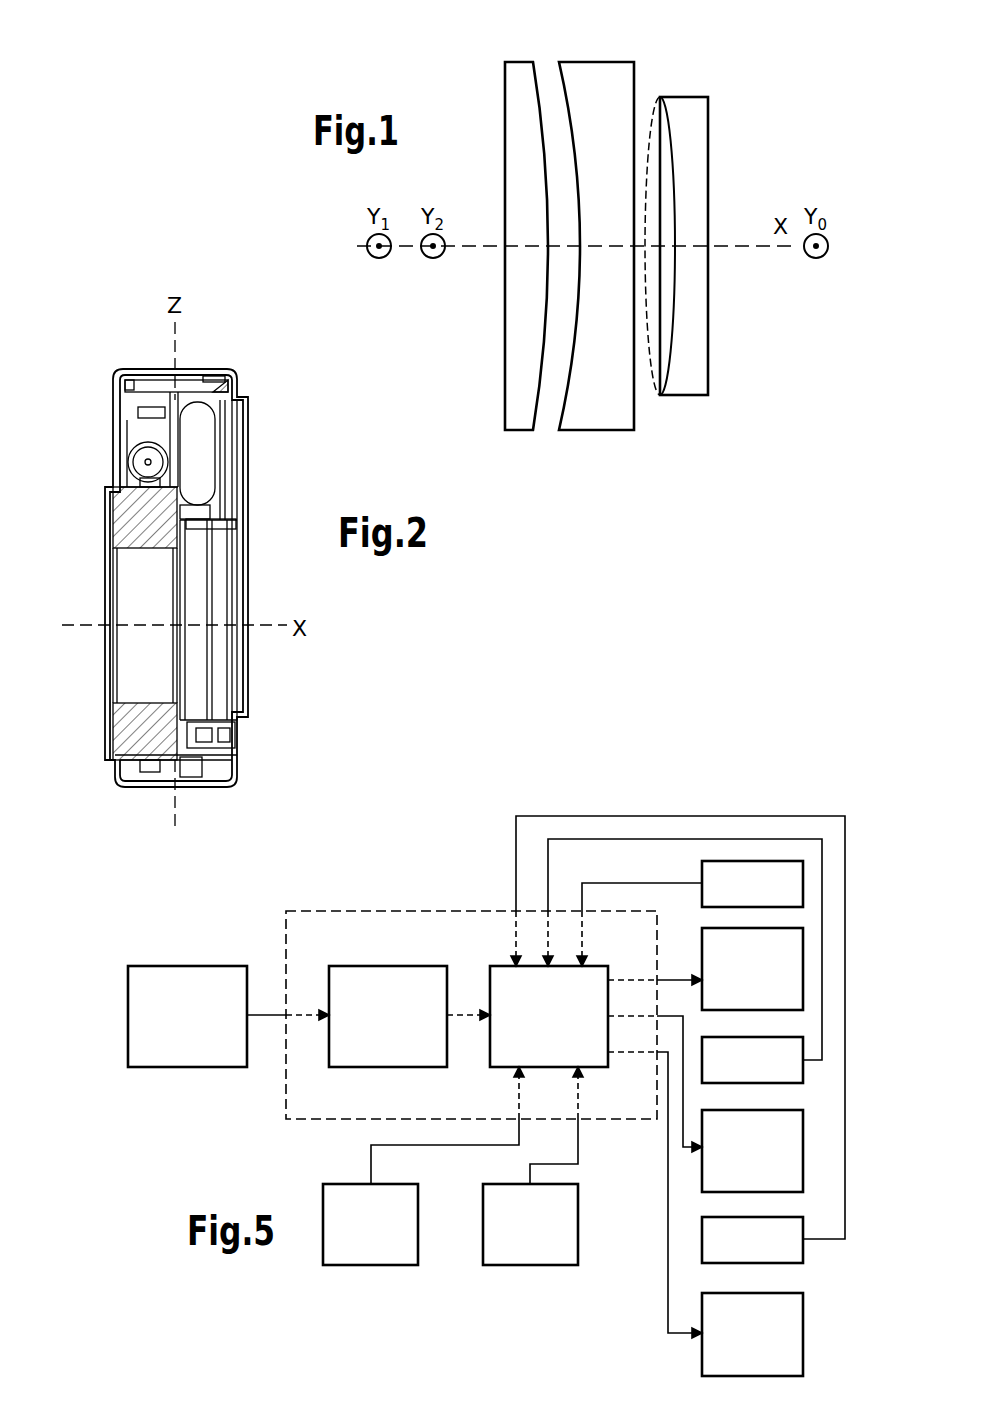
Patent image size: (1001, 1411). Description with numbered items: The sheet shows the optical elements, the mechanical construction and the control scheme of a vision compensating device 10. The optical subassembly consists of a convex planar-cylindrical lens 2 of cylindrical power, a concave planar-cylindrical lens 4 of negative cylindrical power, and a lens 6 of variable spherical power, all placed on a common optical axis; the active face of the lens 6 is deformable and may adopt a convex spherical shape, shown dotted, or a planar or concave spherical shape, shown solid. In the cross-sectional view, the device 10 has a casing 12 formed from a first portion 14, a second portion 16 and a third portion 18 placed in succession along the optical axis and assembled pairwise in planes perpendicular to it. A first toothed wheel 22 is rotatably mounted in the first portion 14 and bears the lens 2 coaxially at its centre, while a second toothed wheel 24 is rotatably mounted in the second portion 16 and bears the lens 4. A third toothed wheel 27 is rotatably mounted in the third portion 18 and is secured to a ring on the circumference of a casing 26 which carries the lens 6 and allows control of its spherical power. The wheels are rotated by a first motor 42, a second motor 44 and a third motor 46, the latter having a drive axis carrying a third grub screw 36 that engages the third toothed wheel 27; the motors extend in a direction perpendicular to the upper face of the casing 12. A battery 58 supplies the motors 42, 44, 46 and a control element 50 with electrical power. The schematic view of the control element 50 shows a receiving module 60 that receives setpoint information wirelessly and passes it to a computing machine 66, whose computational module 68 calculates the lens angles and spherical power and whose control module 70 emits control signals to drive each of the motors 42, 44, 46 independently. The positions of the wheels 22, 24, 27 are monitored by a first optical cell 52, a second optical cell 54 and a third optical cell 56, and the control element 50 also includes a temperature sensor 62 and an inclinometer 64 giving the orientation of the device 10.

In FIG. 1, the convex planar-cylindrical lens 2 is at (505, 108).
In FIG. 2, the convex planar-cylindrical lens 2 is at (220, 605).
In FIG. 1, the concave planar-cylindrical lens 4 is at (634, 418).
In FIG. 2, the concave planar-cylindrical lens 4 is at (200, 564).
In FIG. 1, the lens of variable spherical power 6 is at (708, 153).
In FIG. 2, the lens of variable spherical power 6 is at (130, 592).
In FIG. 2, the vision compensating device 10 is at (151, 326).
In FIG. 2, the casing 12 is at (98, 380).
In FIG. 2, the first portion 14 is at (222, 372).
In FIG. 2, the second portion 16 is at (187, 370).
In FIG. 2, the third portion 18 is at (136, 392).
In FIG. 2, the first toothed wheel 22 is at (213, 735).
In FIG. 2, the second toothed wheel 24 is at (206, 722).
In FIG. 2, the casing of the variable spherical power lens 26 is at (127, 722).
In FIG. 2, the third toothed wheel 27 is at (148, 772).
In FIG. 2, the third grub screw 36 is at (138, 462).
In FIG. 5, the first motor 42 is at (700, 940).
In FIG. 5, the second motor 44 is at (702, 1180).
In FIG. 5, the third motor 46 is at (702, 1358).
In FIG. 2, the control element 50 is at (240, 371).
In FIG. 5, the control element 50 is at (421, 866).
In FIG. 2, the first optical cell 52 is at (242, 740).
In FIG. 5, the first optical cell 52 is at (772, 861).
In FIG. 2, the second optical cell 54 is at (197, 765).
In FIG. 5, the second optical cell 54 is at (702, 1067).
In FIG. 5, the third optical cell 56 is at (803, 1252).
In FIG. 2, the battery 58 is at (203, 441).
In FIG. 5, the receiving module 60 is at (128, 1040).
In FIG. 5, the temperature sensor 62 is at (358, 1265).
In FIG. 5, the inclinometer 64 is at (510, 1265).
In FIG. 5, the computing machine 66 is at (285, 1098).
In FIG. 5, the computational module 68 is at (420, 965).
In FIG. 5, the control module 70 is at (490, 982).